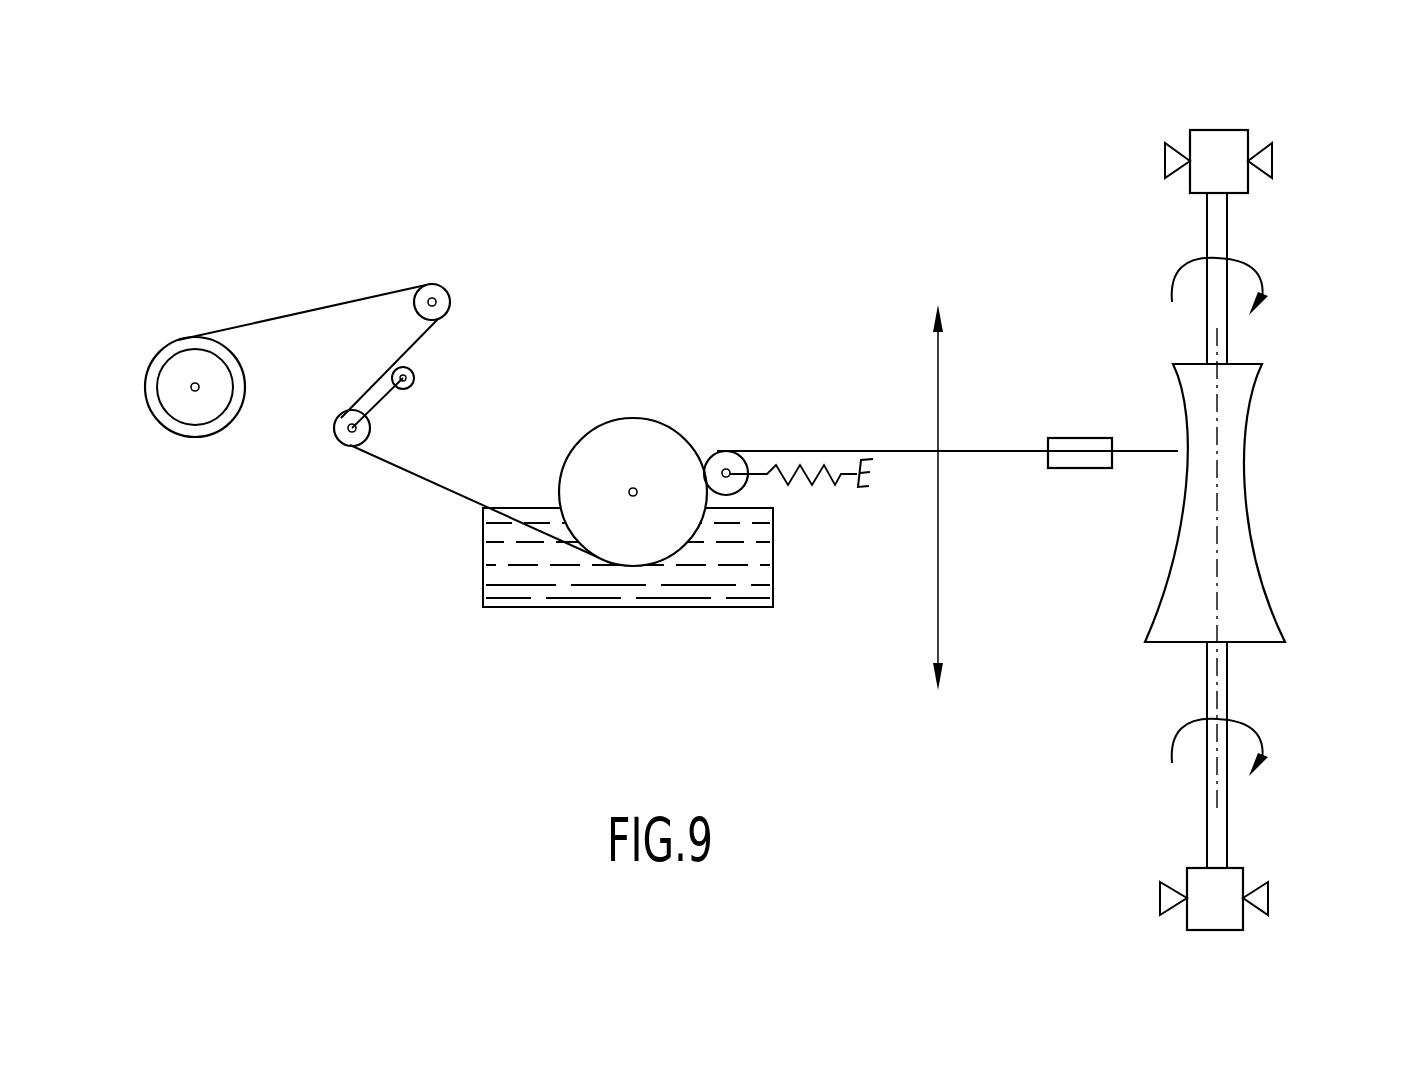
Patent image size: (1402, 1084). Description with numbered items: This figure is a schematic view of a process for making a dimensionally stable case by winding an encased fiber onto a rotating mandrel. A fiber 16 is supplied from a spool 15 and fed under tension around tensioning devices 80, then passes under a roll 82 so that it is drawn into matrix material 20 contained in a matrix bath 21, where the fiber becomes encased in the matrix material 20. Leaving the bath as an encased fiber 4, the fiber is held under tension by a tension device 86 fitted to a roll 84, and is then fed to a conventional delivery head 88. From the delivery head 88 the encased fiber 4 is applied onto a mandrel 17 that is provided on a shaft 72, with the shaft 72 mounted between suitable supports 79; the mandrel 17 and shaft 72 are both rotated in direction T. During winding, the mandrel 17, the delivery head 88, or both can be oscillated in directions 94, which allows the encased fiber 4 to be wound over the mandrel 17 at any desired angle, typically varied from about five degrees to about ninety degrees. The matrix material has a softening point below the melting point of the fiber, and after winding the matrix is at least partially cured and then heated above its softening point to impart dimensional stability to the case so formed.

The spool 15 is at (172, 355).
The fiber 16 is at (301, 312).
The tensioning devices 80 is at (443, 292).
The matrix material 20 is at (575, 607).
The matrix bath 21 is at (703, 605).
The roll 82 is at (584, 463).
The roll 84 is at (717, 457).
The encased fiber 4 is at (809, 450).
The tension device 86 is at (817, 480).
The oscillation directions 94 is at (938, 355).
The delivery head 88 is at (1078, 438).
The mandrel 17 is at (1268, 643).
The shaft 72 is at (1215, 798).
The supports 79 is at (1220, 130).
The direction of rotation T is at (1168, 280).